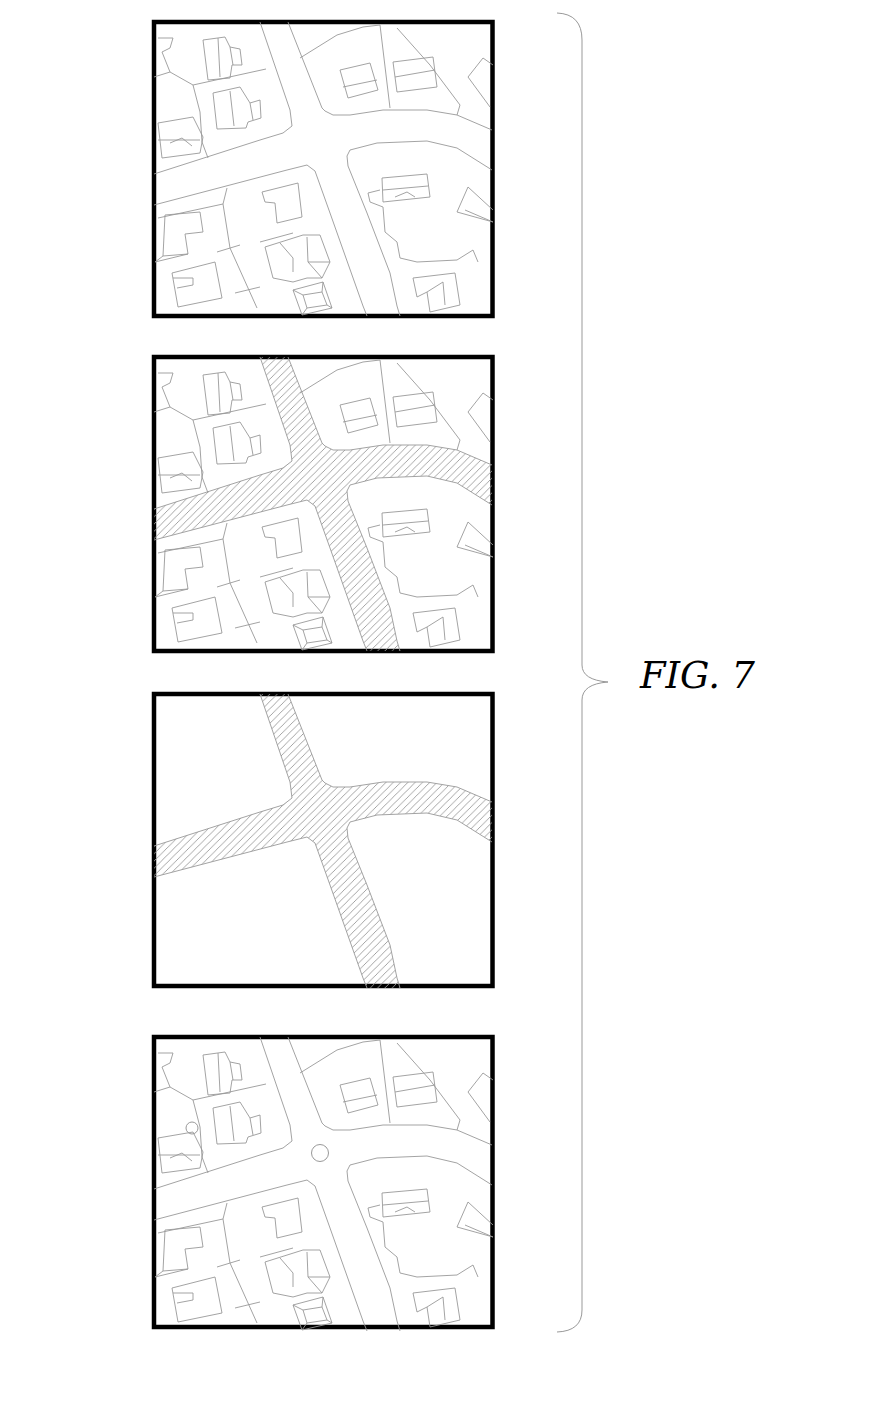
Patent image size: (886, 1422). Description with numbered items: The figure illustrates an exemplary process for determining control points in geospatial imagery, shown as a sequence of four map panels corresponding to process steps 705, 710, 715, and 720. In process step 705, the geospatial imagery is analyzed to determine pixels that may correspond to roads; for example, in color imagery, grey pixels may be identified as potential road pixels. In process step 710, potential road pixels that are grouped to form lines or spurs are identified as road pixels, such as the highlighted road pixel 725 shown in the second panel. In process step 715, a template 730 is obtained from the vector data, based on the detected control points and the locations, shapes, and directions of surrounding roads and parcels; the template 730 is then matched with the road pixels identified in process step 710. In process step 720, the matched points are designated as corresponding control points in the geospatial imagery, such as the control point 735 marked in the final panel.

The process step 705 is at (135, 63).
The process step 710 is at (275, 470).
The process step 715 is at (274, 805).
The process step 720 is at (276, 1147).
The road pixel 725 is at (153, 529).
The template 730 is at (232, 832).
The control point 735 is at (313, 1150).